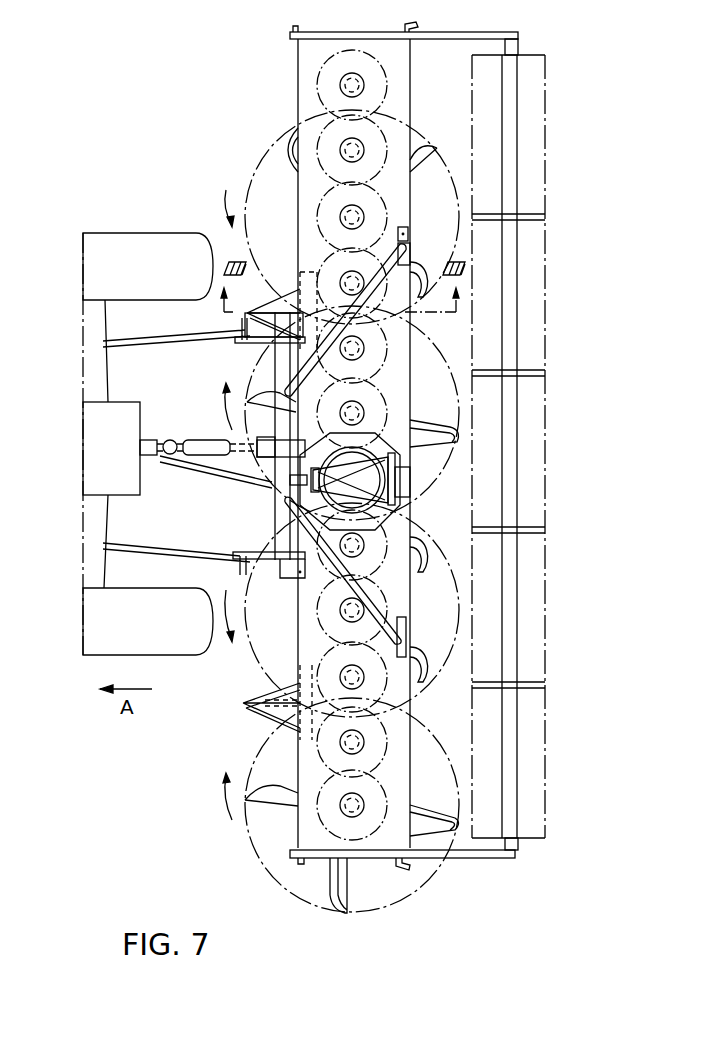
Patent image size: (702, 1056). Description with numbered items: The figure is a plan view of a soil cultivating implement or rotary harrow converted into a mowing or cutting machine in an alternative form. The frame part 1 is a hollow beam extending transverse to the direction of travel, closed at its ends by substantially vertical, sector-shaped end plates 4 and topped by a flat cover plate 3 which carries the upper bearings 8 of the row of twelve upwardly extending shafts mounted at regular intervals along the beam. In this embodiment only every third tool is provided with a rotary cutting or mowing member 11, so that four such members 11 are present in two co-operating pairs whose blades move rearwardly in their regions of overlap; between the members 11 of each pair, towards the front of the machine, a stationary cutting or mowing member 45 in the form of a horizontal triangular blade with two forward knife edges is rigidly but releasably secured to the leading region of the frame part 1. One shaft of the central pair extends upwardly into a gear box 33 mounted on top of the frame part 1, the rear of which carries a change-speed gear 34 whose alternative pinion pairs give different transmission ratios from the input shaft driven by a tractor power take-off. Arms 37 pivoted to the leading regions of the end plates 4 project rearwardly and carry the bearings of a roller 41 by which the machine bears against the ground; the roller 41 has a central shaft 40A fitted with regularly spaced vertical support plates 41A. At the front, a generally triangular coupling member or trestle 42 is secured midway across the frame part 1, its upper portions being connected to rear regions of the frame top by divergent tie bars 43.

The frame part 1 is at (410, 115).
The cover plate 3 is at (398, 205).
The end plate 4 is at (296, 52).
The upper bearing 8 is at (345, 216).
The cutting or mowing member 11 is at (290, 170).
The gear box 33 is at (400, 469).
The change-speed gear 34 is at (410, 515).
The arm 37 is at (474, 38).
The central shaft 40A is at (510, 507).
The roller 41 is at (545, 341).
The vertical support plate 41A is at (545, 688).
The coupling member or trestle 42 is at (277, 515).
The tie bar 43 is at (382, 616).
The stationary cutting or mowing member 45 is at (267, 332).